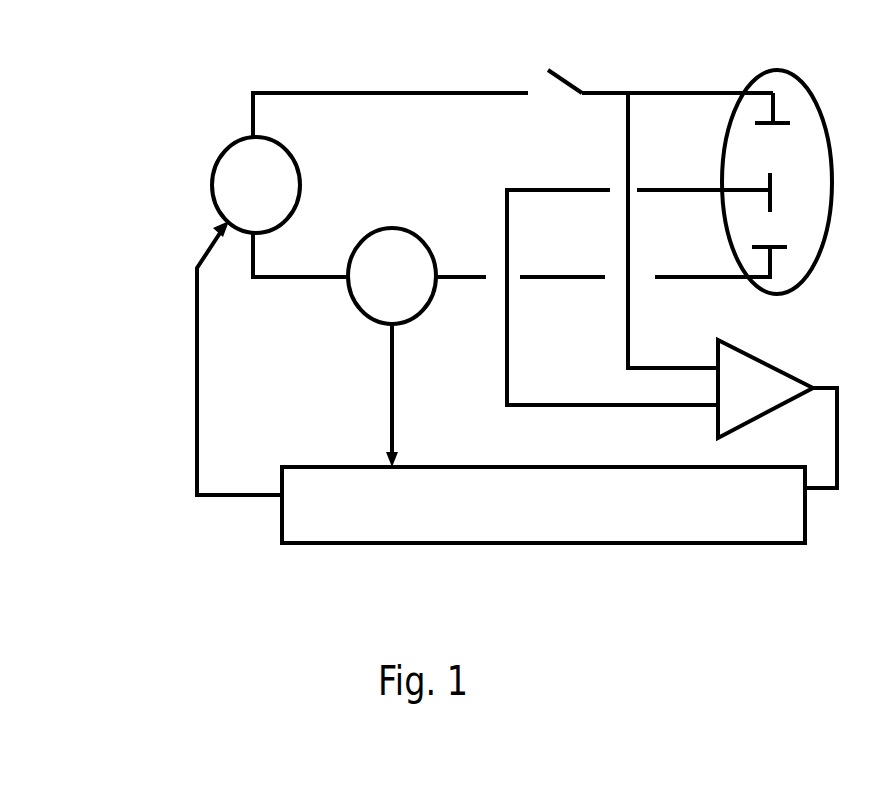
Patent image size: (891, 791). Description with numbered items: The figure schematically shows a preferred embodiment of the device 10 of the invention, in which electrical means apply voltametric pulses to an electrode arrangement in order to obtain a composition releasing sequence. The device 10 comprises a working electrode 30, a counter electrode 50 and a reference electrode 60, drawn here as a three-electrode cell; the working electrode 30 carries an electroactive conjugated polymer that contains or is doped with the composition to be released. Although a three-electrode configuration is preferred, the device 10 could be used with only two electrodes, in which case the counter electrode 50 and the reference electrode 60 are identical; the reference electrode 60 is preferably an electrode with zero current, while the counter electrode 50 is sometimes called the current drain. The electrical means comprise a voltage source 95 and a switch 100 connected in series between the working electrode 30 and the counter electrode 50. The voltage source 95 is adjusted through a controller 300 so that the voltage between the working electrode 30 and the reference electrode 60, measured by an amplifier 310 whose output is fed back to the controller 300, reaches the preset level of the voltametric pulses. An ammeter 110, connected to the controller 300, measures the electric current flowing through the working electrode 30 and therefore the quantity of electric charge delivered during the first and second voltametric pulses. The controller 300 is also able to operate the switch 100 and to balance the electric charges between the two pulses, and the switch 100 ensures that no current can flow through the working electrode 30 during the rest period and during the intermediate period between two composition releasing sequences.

The device 10 is at (160, 93).
The voltage source 95 is at (256, 185).
The ammeter 110 is at (392, 276).
The switch 100 is at (565, 50).
The working electrode 30 is at (812, 112).
The reference electrode 60 is at (755, 188).
The counter electrode 50 is at (764, 252).
The controller 300 is at (543, 505).
The amplifier 310 is at (765, 389).